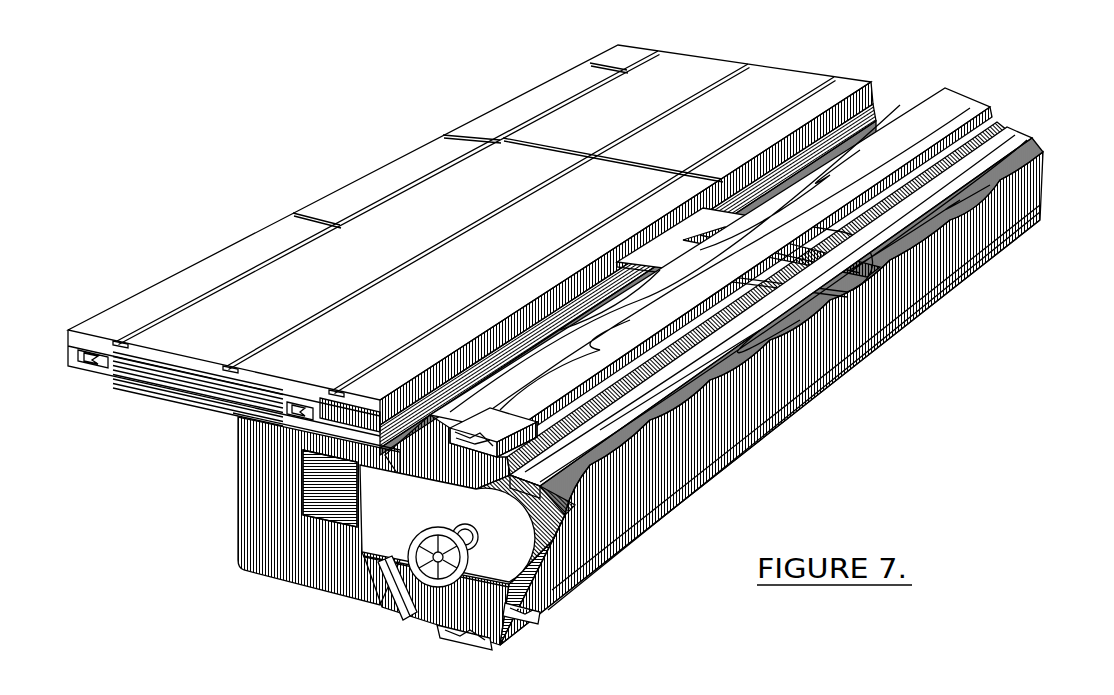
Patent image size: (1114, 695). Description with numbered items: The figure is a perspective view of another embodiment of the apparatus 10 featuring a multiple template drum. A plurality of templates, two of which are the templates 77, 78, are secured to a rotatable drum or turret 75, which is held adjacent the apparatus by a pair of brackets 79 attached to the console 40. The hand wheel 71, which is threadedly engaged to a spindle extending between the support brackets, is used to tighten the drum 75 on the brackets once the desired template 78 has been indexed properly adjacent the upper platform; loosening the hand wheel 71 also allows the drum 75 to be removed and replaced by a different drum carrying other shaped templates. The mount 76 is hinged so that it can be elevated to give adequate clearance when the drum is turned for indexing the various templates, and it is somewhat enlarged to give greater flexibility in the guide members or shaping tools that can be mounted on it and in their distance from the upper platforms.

The floor panel assembly 10 is at (653, 87).
The console 40 is at (265, 480).
The hand wheel 71 is at (440, 610).
The rotatable drum 75 is at (540, 620).
The mount 76 is at (973, 268).
The template 77 is at (1020, 143).
The template 78 is at (957, 108).
The brackets 79 is at (392, 538).